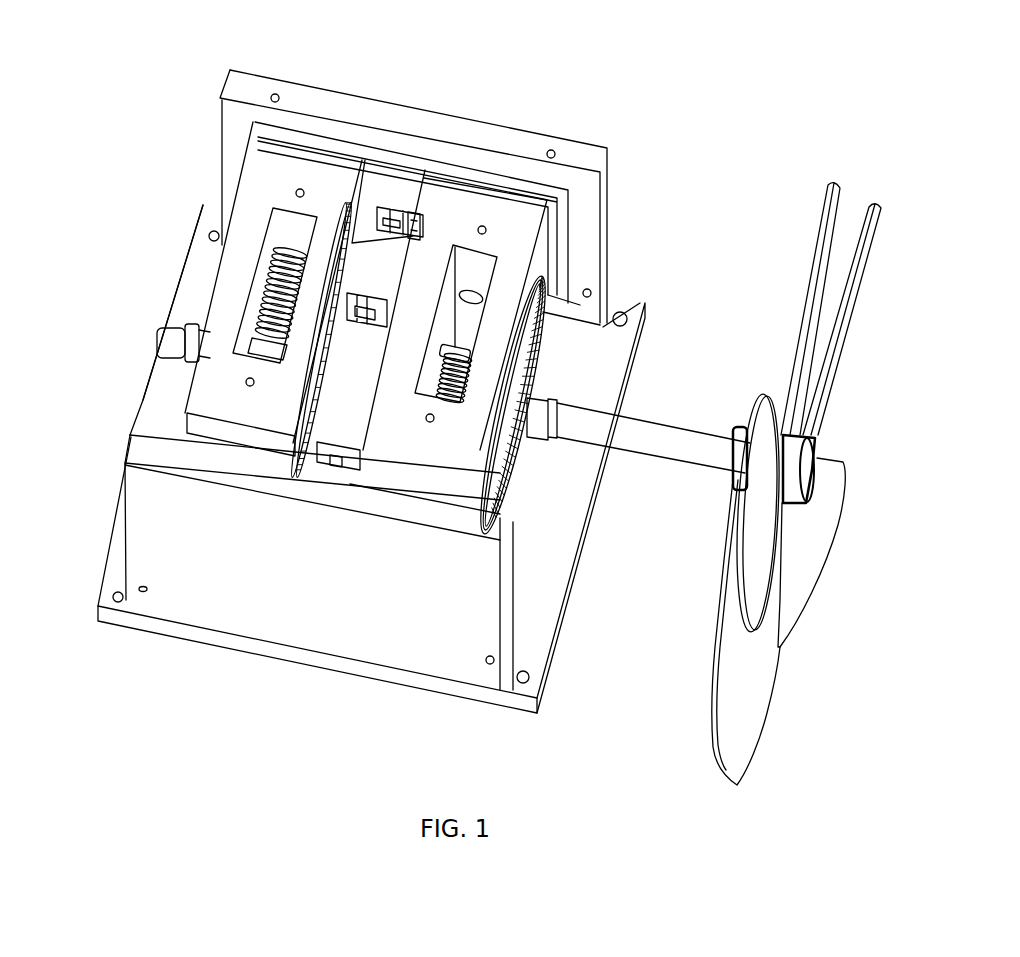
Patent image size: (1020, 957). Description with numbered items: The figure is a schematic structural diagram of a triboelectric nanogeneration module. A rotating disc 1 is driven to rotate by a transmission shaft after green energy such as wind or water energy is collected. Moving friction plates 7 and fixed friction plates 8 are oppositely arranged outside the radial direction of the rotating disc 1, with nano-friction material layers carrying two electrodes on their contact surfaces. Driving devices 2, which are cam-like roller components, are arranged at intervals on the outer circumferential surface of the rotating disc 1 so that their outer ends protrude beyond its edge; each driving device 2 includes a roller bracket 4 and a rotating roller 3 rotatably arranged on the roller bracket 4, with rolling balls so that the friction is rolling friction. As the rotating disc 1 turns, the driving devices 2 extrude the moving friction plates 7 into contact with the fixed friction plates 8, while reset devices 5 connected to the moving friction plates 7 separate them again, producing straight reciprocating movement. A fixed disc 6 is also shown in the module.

The rotating disc 1 is at (378, 265).
The driving device 2 is at (330, 320).
The rotating roller 3 is at (398, 212).
The roller bracket 4 is at (418, 235).
The reset device 5 is at (268, 295).
The fixed disc 6 is at (303, 174).
The moving friction plate 7 is at (338, 168).
The fixed friction plate 8 is at (312, 103).